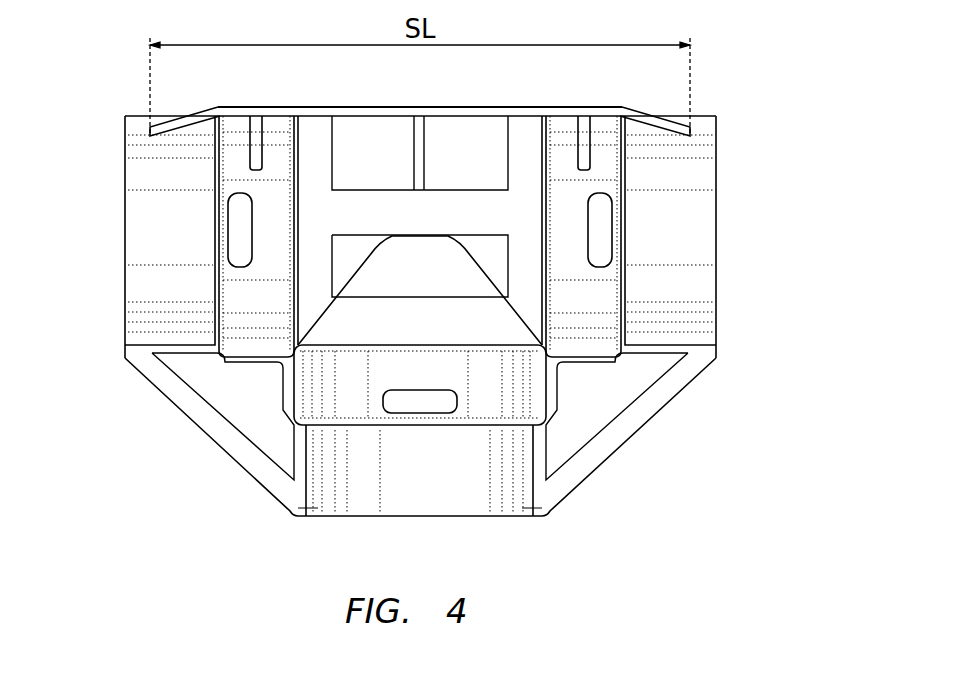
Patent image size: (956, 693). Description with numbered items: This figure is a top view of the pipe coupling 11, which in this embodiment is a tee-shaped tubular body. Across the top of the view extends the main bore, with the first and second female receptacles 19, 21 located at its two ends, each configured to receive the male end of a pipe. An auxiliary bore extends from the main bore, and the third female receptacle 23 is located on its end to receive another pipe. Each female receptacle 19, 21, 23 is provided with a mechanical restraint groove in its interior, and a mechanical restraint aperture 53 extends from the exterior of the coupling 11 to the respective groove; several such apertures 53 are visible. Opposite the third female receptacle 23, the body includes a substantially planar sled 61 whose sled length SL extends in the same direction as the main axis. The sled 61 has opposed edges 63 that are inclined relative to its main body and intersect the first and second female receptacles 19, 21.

The pipe coupling 11 is at (728, 470).
The first female receptacle 19 is at (136, 238).
The second female receptacle 21 is at (700, 230).
The third female receptacle 23 is at (430, 517).
The mechanical restraint aperture 53 is at (240, 243).
The sled 61 is at (422, 107).
The opposed edges 63 is at (206, 114).